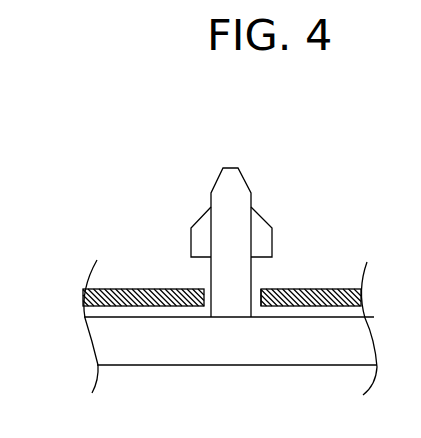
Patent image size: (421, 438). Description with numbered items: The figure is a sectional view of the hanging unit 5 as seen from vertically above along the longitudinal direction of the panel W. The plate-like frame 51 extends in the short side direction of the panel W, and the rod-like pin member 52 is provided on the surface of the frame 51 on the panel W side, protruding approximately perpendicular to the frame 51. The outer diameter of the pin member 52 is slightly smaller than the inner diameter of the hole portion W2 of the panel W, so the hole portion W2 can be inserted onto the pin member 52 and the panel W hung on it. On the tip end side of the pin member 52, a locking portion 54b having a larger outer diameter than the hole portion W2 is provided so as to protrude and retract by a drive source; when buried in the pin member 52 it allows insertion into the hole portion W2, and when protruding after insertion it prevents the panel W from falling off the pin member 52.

The hanging unit 5 is at (62, 184).
The frame 51 is at (217, 365).
The pin member 52 is at (232, 168).
The locking portion 54b is at (201, 232).
The panel W is at (327, 288).
The hole portion W2 is at (257, 288).